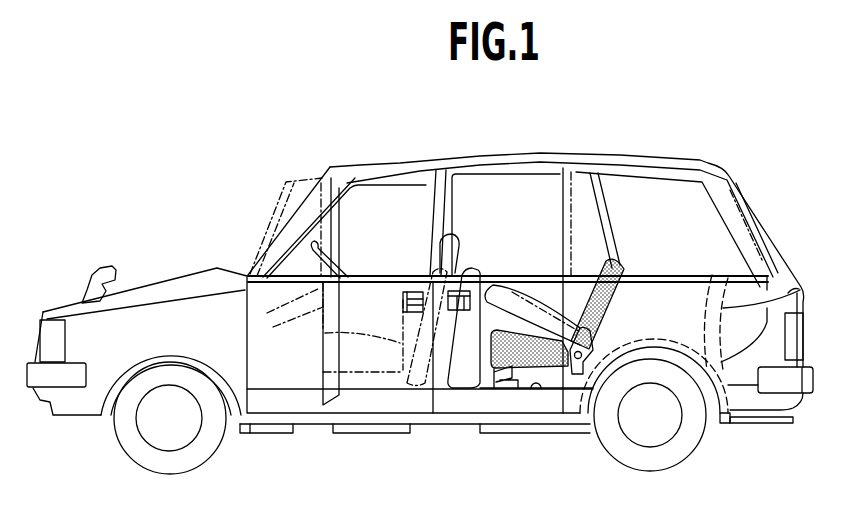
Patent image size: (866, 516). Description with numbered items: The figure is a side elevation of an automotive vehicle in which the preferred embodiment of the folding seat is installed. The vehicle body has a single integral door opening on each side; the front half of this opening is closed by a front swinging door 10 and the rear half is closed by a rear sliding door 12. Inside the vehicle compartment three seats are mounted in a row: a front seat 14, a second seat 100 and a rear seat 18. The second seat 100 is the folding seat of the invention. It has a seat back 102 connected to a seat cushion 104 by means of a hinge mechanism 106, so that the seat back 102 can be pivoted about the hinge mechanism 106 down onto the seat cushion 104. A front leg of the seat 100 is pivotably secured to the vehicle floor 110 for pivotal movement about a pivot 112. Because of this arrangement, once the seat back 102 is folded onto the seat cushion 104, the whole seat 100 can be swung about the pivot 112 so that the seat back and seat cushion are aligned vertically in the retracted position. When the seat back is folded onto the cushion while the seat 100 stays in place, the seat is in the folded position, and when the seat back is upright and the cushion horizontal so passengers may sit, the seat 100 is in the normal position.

The front swinging door 10 is at (249, 273).
The rear sliding door 12 is at (740, 180).
The front seat 14 is at (421, 284).
The rear seat 18 is at (799, 289).
The second seat 100 is at (473, 256).
The seat back 102 is at (610, 303).
The seat cushion 104 is at (511, 355).
The hinge mechanism 106 is at (589, 362).
The vehicle floor 110 is at (537, 390).
The pivot 112 is at (495, 372).